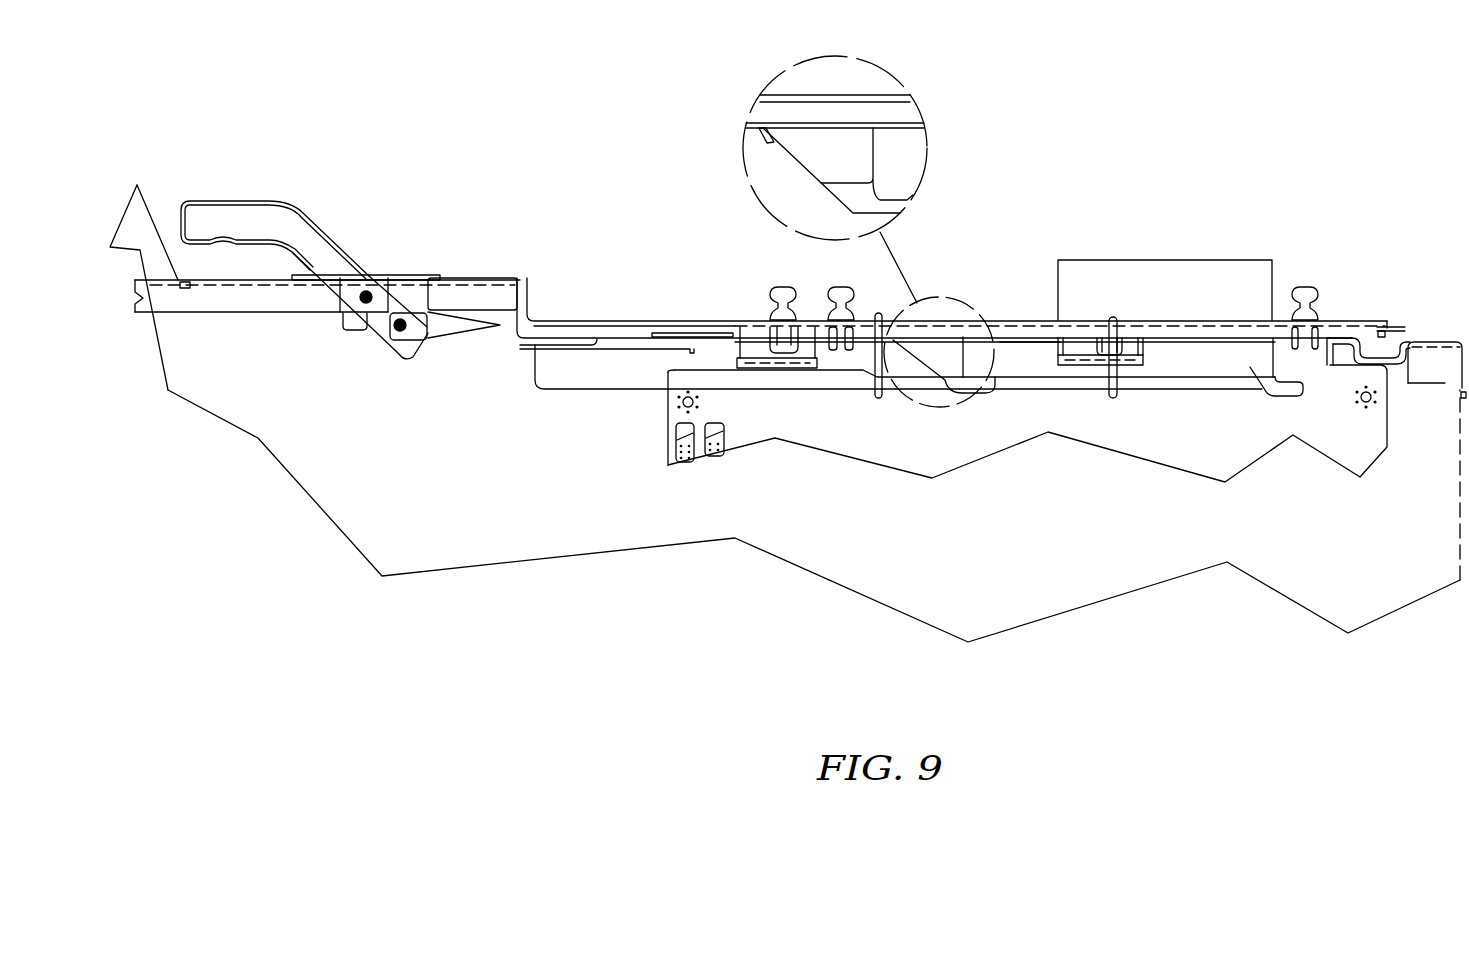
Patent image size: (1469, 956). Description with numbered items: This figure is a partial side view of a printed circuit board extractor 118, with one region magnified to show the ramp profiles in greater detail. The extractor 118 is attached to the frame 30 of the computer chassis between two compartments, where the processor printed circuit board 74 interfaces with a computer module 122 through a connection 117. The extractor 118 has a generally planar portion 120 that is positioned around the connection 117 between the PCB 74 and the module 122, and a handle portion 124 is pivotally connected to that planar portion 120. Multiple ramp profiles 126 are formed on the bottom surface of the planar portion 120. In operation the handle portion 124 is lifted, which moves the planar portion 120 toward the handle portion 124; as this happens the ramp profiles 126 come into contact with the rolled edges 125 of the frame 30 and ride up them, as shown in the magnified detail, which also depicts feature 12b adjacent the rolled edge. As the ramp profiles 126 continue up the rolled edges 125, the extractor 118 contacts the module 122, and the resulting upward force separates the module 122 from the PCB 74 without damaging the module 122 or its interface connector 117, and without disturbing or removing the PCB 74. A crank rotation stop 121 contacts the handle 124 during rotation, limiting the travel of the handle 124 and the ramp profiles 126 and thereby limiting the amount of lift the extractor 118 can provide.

The frame 30 is at (208, 306).
The handle portion 124 is at (270, 216).
The printed circuit board extractor 118 is at (378, 236).
The crank rotation stop 121 is at (343, 330).
The generally planar portion 120 is at (584, 322).
The processor printed circuit board 74 is at (670, 425).
The ramp profiles 126 is at (943, 375).
The connection (interface connector) 117 is at (1023, 355).
The module 122 is at (1217, 268).
The bracket 12b is at (865, 147).
The rolled edges 125 is at (760, 140).